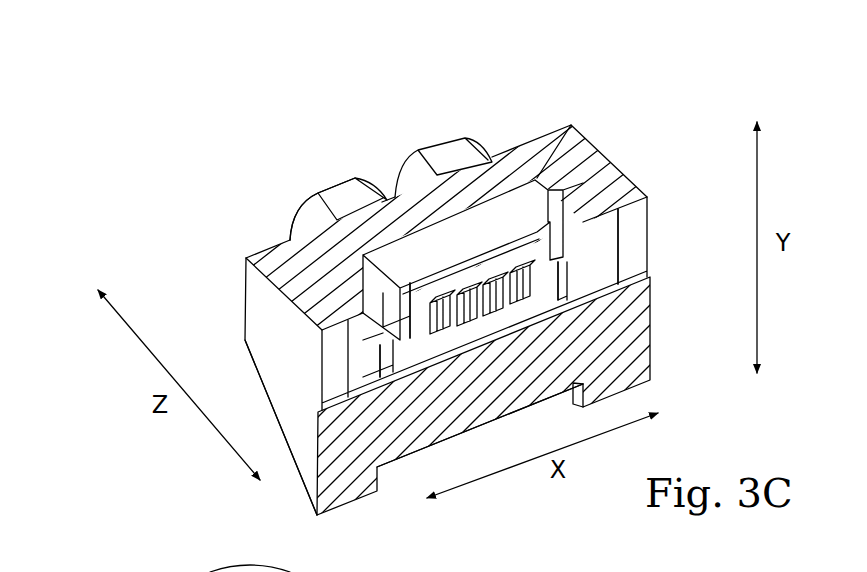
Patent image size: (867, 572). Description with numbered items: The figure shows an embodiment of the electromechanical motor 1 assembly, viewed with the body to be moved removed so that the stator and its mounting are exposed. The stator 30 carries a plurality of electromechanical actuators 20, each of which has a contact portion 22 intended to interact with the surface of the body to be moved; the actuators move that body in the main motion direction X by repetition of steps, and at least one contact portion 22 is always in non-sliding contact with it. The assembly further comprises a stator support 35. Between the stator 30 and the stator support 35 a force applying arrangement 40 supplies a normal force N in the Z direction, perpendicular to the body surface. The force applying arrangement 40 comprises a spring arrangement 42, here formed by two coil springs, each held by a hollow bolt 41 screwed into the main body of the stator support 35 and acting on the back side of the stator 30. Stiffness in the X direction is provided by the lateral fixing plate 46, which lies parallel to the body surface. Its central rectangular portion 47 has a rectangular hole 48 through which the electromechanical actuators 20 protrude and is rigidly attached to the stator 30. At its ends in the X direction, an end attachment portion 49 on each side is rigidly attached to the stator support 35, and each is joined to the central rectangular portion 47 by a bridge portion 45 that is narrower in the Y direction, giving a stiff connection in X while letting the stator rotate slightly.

The electromechanical motor 1 is at (148, 153).
The electromechanical actuator 20 is at (428, 307).
The contact portion 22 is at (470, 305).
The stator 30 is at (520, 218).
The stator support 35 is at (268, 358).
The force applying arrangement 40 is at (347, 186).
The hollow bolt 41 is at (313, 210).
The spring arrangement 42 is at (298, 180).
The bridge portion 45 is at (572, 275).
The lateral fixing plate 46 is at (540, 285).
The central rectangular portion 47 is at (440, 398).
The rectangular hole 48 is at (440, 310).
The end attachment portion 49 is at (592, 268).
The normal force N is at (398, 140).